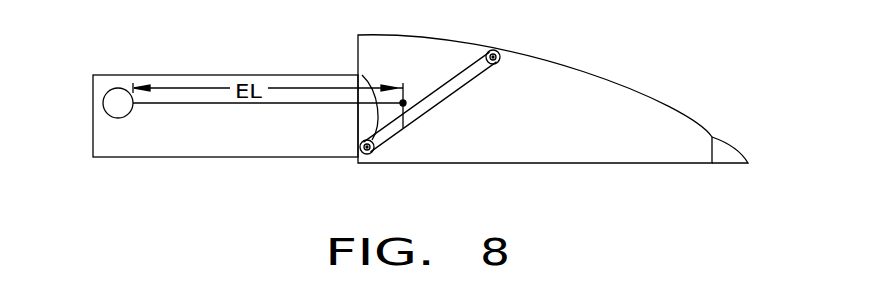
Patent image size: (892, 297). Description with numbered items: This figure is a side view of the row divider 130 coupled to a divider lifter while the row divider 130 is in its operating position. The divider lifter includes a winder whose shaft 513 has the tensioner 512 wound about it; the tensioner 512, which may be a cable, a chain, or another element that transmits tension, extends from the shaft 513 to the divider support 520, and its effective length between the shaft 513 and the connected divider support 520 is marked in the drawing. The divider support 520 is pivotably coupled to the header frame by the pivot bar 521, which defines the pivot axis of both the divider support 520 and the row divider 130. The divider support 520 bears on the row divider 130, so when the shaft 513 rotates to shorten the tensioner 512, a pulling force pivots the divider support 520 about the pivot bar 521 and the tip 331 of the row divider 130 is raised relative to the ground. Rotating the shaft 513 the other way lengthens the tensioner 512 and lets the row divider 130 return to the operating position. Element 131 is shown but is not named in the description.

The base sled / housing 131 is at (187, 73).
The shaft 513 is at (107, 100).
The tensioner 512 is at (292, 103).
The row divider 130 is at (638, 92).
The tip 331 is at (733, 147).
The divider support 520 is at (415, 127).
The pivot bar 521 is at (370, 154).